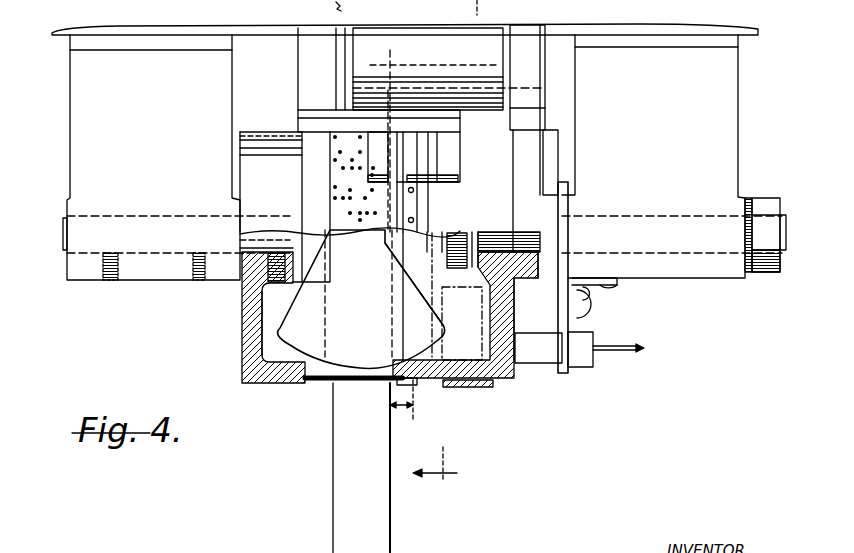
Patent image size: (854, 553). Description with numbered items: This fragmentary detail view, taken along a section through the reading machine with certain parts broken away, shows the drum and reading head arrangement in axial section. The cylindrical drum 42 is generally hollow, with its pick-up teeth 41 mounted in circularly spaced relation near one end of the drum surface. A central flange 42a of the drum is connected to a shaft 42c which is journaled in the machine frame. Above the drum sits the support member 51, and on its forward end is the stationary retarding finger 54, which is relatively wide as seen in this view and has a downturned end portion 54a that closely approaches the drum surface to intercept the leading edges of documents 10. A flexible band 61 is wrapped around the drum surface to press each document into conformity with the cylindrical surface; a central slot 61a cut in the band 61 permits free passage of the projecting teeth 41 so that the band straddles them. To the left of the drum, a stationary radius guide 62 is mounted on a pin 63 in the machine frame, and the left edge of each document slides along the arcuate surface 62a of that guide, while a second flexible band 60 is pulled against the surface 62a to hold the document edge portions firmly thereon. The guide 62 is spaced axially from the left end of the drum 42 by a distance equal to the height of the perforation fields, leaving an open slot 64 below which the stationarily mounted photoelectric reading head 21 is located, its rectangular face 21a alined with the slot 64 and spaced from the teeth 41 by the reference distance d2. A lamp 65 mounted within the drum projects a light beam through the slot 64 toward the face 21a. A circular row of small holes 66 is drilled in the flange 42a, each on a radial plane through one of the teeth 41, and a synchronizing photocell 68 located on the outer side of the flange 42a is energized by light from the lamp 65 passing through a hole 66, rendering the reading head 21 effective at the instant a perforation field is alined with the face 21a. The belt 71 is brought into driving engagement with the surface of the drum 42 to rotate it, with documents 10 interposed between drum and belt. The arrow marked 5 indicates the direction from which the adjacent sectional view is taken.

The document 10 is at (348, 143).
The photoelectric reading head 21 is at (348, 487).
The rectangular front face 21a is at (355, 378).
The teeth 41 is at (417, 220).
The cylindrical drum 42 is at (508, 378).
The central flange 42a is at (500, 305).
The shaft 42c is at (512, 223).
The support member 51 is at (440, 55).
The stationary retarding finger 54 is at (443, 147).
The downturned end portion 54a is at (443, 178).
The second flexible band 60 is at (313, 194).
The flexible band 61 is at (418, 162).
The central slot 61a is at (412, 147).
The stationary radius guide 62 is at (275, 378).
The arcuate surface 62a is at (315, 367).
The pin 63 is at (265, 238).
The open slot 64 is at (382, 370).
The lamp 65 is at (307, 307).
The small holes 66 is at (493, 347).
The synchronizing photocell 68 is at (552, 357).
The belt 71 is at (487, 387).
The reference distance d2 is at (395, 410).
The section line 5 is at (435, 478).